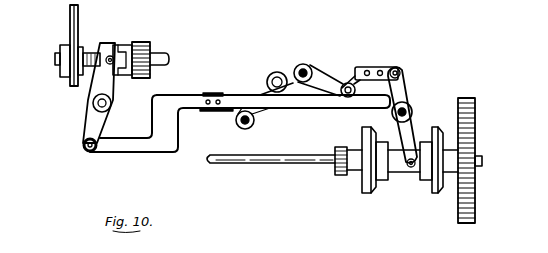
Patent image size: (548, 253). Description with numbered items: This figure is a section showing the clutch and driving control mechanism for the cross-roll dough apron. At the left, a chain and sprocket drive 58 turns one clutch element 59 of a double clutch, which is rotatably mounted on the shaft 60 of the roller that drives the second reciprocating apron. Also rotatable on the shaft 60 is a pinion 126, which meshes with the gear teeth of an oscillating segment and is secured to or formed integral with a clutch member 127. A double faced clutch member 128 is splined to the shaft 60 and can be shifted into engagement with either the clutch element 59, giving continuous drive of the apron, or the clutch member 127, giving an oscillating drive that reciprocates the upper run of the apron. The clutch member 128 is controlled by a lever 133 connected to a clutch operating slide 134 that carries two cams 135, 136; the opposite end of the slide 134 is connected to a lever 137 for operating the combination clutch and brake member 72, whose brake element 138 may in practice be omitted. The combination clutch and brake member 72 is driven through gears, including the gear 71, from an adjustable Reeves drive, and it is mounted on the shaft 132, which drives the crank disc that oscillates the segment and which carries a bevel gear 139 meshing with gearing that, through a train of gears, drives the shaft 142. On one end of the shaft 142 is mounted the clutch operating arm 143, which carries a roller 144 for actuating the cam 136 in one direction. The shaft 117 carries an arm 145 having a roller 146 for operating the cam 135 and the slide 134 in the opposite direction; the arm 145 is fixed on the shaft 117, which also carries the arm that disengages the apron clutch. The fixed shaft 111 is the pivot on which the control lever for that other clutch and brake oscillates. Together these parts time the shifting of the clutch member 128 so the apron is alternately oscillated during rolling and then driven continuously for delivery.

The chain and sprocket drive 58 is at (68, 33).
The clutch element 59 is at (82, 80).
The shaft 60 is at (164, 53).
The gear 71 is at (463, 132).
The combination clutch and brake member 72 is at (435, 195).
The fixed shaft 111 is at (410, 107).
The shaft 117 is at (278, 72).
The pinion 126 is at (148, 43).
The clutch member 127 is at (118, 43).
The double faced clutch member 128 is at (112, 42).
The shaft 132 is at (279, 160).
The lever 133 is at (98, 125).
The clutch operating slide 134 is at (135, 143).
The cam 135 is at (212, 93).
The cam 136 is at (378, 67).
The lever 137 is at (400, 88).
The brake element 138 is at (375, 195).
The bevel gear 139 is at (335, 148).
The shaft 142 is at (320, 43).
The clutch operating arm 143 is at (325, 78).
The roller 144 is at (350, 82).
The arm 145 is at (282, 60).
The roller 146 is at (243, 130).